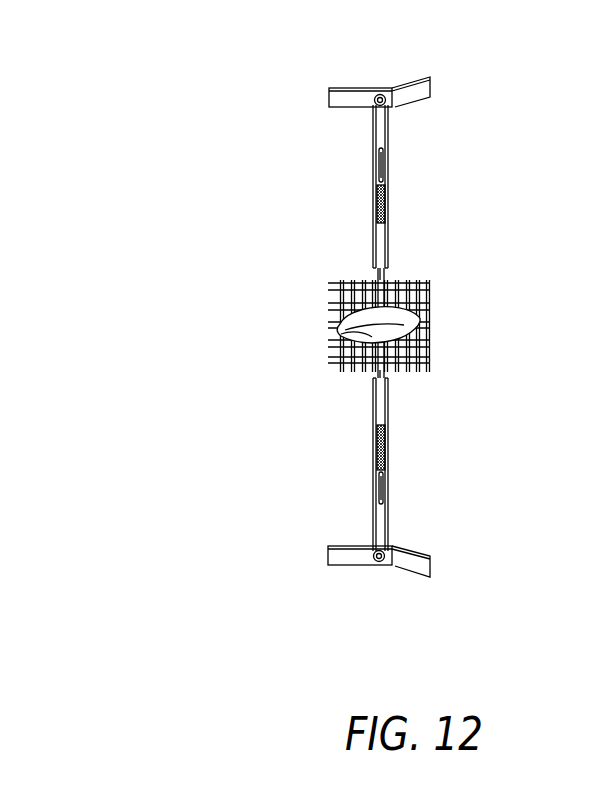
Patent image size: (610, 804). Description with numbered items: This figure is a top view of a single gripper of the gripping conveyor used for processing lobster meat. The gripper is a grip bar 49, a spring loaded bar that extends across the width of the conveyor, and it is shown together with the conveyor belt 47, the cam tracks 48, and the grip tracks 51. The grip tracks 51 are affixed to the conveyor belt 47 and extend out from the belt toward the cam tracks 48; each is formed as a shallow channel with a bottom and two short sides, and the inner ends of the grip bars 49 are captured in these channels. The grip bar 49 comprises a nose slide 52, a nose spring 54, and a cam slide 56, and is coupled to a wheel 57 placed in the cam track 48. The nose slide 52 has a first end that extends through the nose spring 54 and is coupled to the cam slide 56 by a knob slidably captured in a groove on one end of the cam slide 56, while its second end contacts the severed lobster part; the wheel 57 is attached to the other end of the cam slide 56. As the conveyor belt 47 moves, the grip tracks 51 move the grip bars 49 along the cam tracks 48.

The conveyor belt 47 is at (430, 316).
The cam track 48 is at (423, 88).
The grip bar 49 is at (300, 170).
The grip track 51 is at (386, 170).
The nose slide 52 is at (380, 257).
The nose spring 54 is at (380, 208).
The cam slide 56 is at (380, 143).
The wheel 57 is at (381, 93).